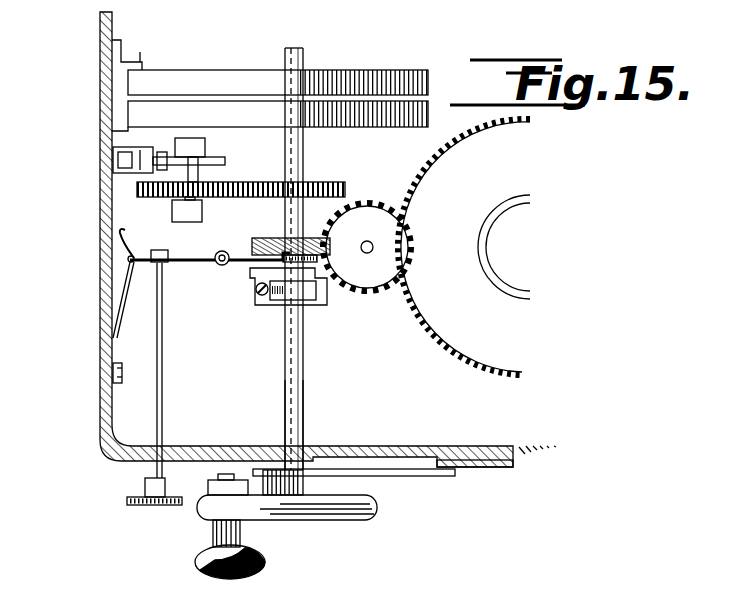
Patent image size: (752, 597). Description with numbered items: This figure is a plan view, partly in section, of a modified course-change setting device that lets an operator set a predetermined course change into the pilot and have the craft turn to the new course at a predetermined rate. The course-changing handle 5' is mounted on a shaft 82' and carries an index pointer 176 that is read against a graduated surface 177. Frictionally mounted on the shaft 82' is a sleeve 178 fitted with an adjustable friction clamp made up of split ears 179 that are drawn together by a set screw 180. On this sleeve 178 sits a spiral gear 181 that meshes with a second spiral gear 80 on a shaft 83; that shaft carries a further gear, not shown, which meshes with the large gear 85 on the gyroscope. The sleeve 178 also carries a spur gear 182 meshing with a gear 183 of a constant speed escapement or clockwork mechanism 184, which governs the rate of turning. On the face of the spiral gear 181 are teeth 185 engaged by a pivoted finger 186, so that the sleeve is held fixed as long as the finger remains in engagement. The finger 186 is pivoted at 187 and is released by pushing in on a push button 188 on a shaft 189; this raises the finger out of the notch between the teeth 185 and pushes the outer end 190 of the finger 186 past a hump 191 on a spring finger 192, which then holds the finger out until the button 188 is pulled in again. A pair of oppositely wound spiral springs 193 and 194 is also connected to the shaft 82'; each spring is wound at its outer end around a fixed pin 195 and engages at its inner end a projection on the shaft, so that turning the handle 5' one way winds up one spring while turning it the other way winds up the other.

The course-changing handle 5' is at (286, 524).
The second spiral gear 80 is at (367, 247).
The shaft 82' is at (314, 425).
The shaft 83 is at (373, 247).
The large gear 85 is at (470, 360).
The index pointer 176 is at (385, 471).
The graduated surface 177 is at (481, 468).
The sleeve 178 is at (328, 290).
The split ears 179 is at (284, 305).
The set screw 180 is at (256, 289).
The spiral gear 181 is at (370, 259).
The spur gear 182 is at (312, 182).
The gear 183 is at (232, 181).
The constant speed escapement or clockwork mechanism 184 is at (204, 160).
The teeth 185 is at (255, 263).
The pivoted finger 186 is at (270, 248).
The pivot 187 is at (212, 262).
The push button 188 is at (134, 497).
The shaft 189 is at (163, 373).
The outer end 190 is at (145, 241).
The hump 191 is at (130, 261).
The spring finger 192 is at (135, 302).
The spiral spring 193 is at (337, 72).
The spiral spring 194 is at (385, 110).
The fixed pin 195 is at (143, 68).